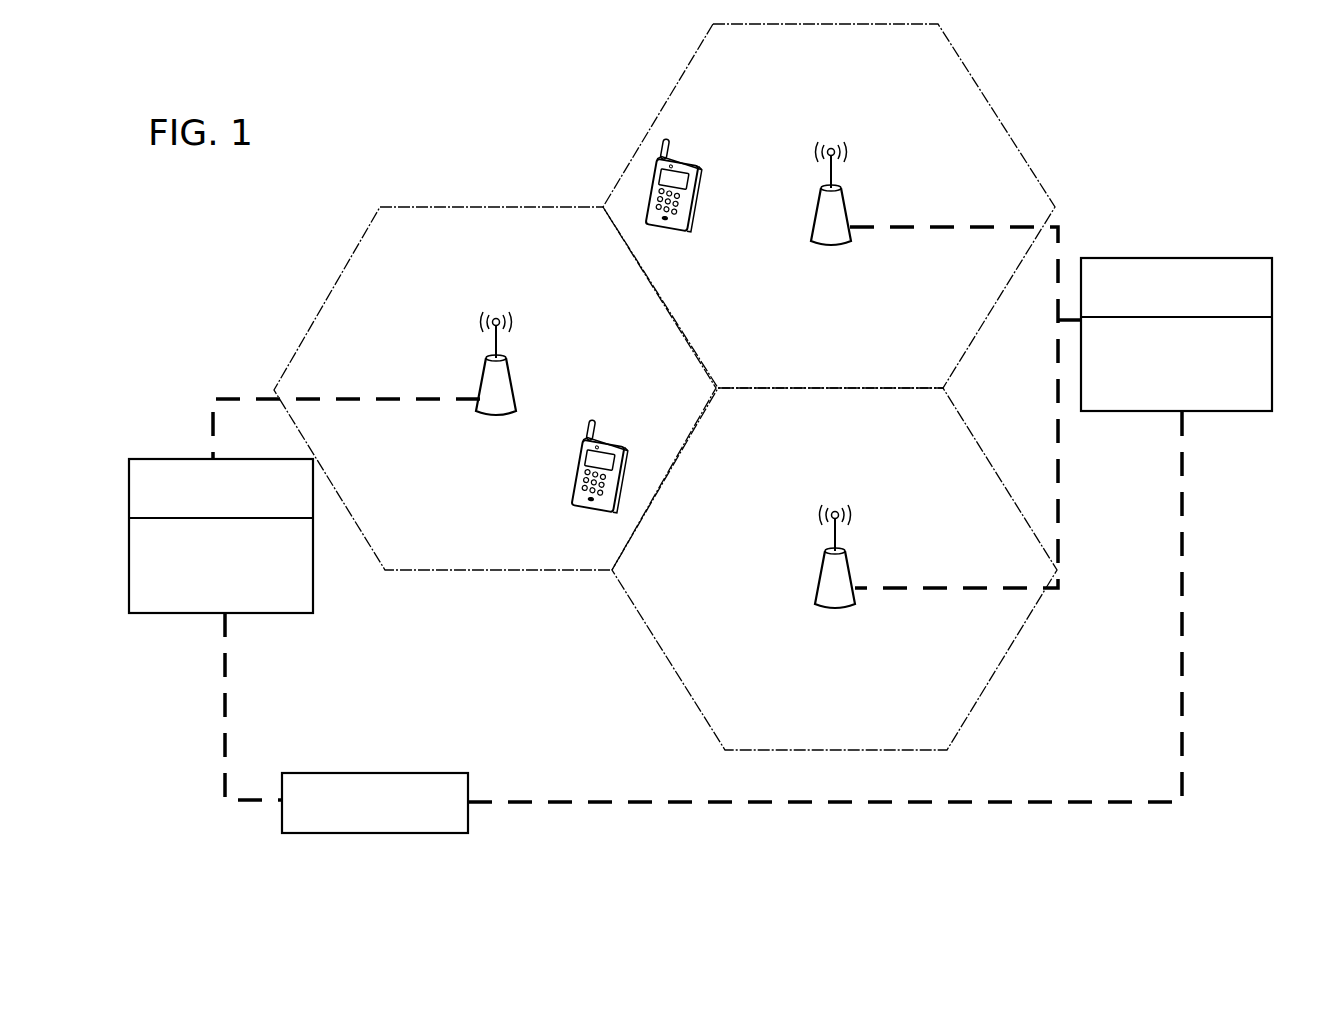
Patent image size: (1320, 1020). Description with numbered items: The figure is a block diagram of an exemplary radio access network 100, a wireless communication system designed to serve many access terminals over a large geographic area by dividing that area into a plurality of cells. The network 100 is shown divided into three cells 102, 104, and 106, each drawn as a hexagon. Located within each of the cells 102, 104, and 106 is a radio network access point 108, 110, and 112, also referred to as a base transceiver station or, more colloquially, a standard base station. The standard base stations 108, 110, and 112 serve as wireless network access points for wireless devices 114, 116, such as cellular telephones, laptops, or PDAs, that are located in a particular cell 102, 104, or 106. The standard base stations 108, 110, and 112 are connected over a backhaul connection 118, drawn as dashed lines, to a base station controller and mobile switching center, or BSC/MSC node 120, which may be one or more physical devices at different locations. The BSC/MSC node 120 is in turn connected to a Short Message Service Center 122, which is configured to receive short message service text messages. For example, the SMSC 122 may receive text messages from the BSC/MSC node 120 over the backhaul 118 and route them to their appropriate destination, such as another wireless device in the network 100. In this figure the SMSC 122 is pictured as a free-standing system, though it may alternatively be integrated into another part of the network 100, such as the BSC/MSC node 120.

The radio access network 100 is at (418, 97).
The cell 102 is at (320, 276).
The cell 104 is at (986, 74).
The cell 106 is at (636, 664).
The radio network access point 108 is at (482, 413).
The radio network access point 110 is at (812, 243).
The radio network access point 112 is at (818, 608).
The wireless device 114 is at (690, 228).
The wireless device 116 is at (585, 505).
The backhaul connection 118 is at (213, 427).
The base station controller and mobile switching center node 120 is at (313, 562).
The Short Message Service Center 122 is at (372, 773).